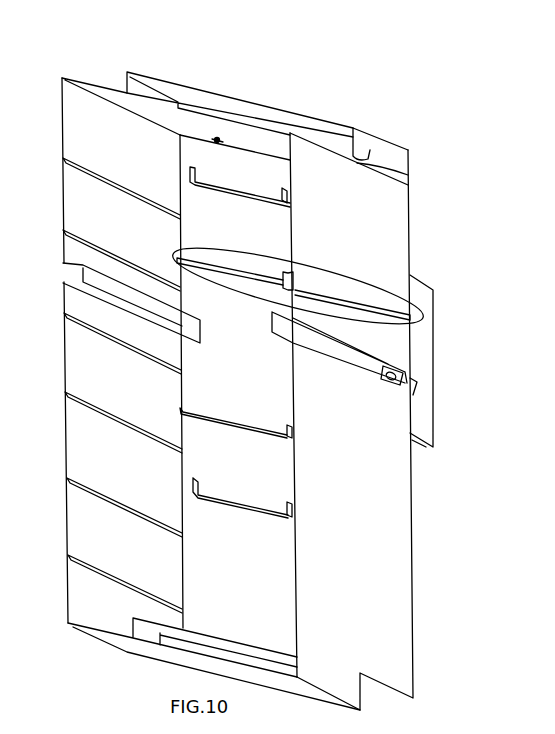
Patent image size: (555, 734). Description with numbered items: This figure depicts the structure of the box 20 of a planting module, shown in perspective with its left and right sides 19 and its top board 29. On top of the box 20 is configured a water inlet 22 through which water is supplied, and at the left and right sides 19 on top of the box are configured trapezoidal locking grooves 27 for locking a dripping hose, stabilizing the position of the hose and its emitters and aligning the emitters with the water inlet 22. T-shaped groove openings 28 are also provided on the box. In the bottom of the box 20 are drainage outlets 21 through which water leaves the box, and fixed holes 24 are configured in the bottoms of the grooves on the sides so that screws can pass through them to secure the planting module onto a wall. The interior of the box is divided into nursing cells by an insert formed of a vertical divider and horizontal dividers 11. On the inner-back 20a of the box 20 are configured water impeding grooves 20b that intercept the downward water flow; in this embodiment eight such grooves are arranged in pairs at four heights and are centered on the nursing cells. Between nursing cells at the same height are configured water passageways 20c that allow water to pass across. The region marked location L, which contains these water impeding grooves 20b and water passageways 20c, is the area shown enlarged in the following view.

The horizontal dividers 11 is at (131, 350).
The left and right sides 19 is at (398, 495).
The box 20 is at (422, 148).
The inner-back of the box 20a is at (185, 155).
The water impeding grooves 20b is at (247, 200).
The water passageways 20c is at (293, 272).
The drainage outlets 21 is at (160, 635).
The water inlet 22 is at (300, 118).
The fixed holes 24 is at (383, 380).
The locking grooves 27 is at (370, 157).
The T-shaped groove openings 28 is at (217, 140).
The top board 29 is at (93, 85).
The location L is at (210, 283).